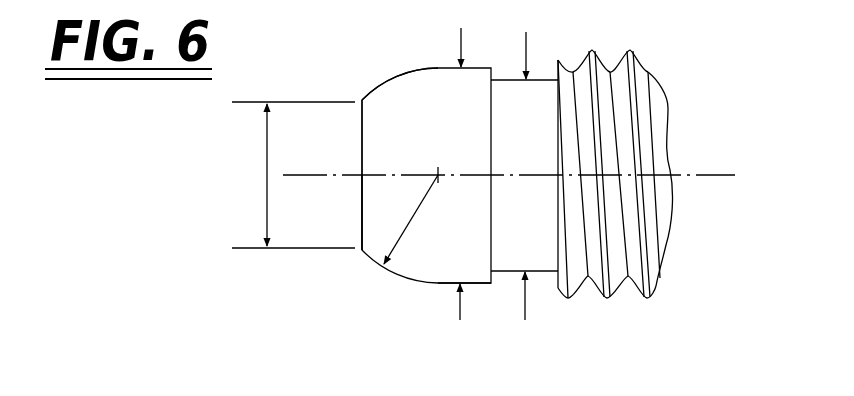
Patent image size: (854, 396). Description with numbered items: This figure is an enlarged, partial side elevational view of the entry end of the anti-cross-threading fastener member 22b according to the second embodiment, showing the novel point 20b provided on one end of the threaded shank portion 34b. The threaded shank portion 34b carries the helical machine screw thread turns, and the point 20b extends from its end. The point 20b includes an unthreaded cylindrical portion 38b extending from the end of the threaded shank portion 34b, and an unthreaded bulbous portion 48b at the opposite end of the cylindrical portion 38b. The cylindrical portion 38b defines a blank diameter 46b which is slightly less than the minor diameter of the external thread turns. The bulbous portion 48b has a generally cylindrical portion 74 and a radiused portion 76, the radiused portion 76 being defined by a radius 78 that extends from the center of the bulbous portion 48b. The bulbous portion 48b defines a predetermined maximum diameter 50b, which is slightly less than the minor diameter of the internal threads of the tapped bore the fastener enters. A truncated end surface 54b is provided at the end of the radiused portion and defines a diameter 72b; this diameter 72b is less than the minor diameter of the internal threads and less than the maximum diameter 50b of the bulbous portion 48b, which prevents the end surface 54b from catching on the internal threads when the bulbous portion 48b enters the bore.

The point 20b is at (404, 71).
The radiused portion 76 is at (397, 93).
The truncated end surface 54b is at (362, 125).
The bulbous portion 48b is at (378, 202).
The diameter of the end surface 72b is at (267, 178).
The radius 78 is at (381, 266).
The cylindrical portion of the bulbous portion 74 is at (445, 257).
The maximum diameter 50b is at (460, 308).
The unthreaded cylindrical portion 38b is at (538, 95).
The blank diameter 46b is at (525, 292).
The threaded shank portion 34b is at (622, 78).
The fastener member 22b is at (631, 175).